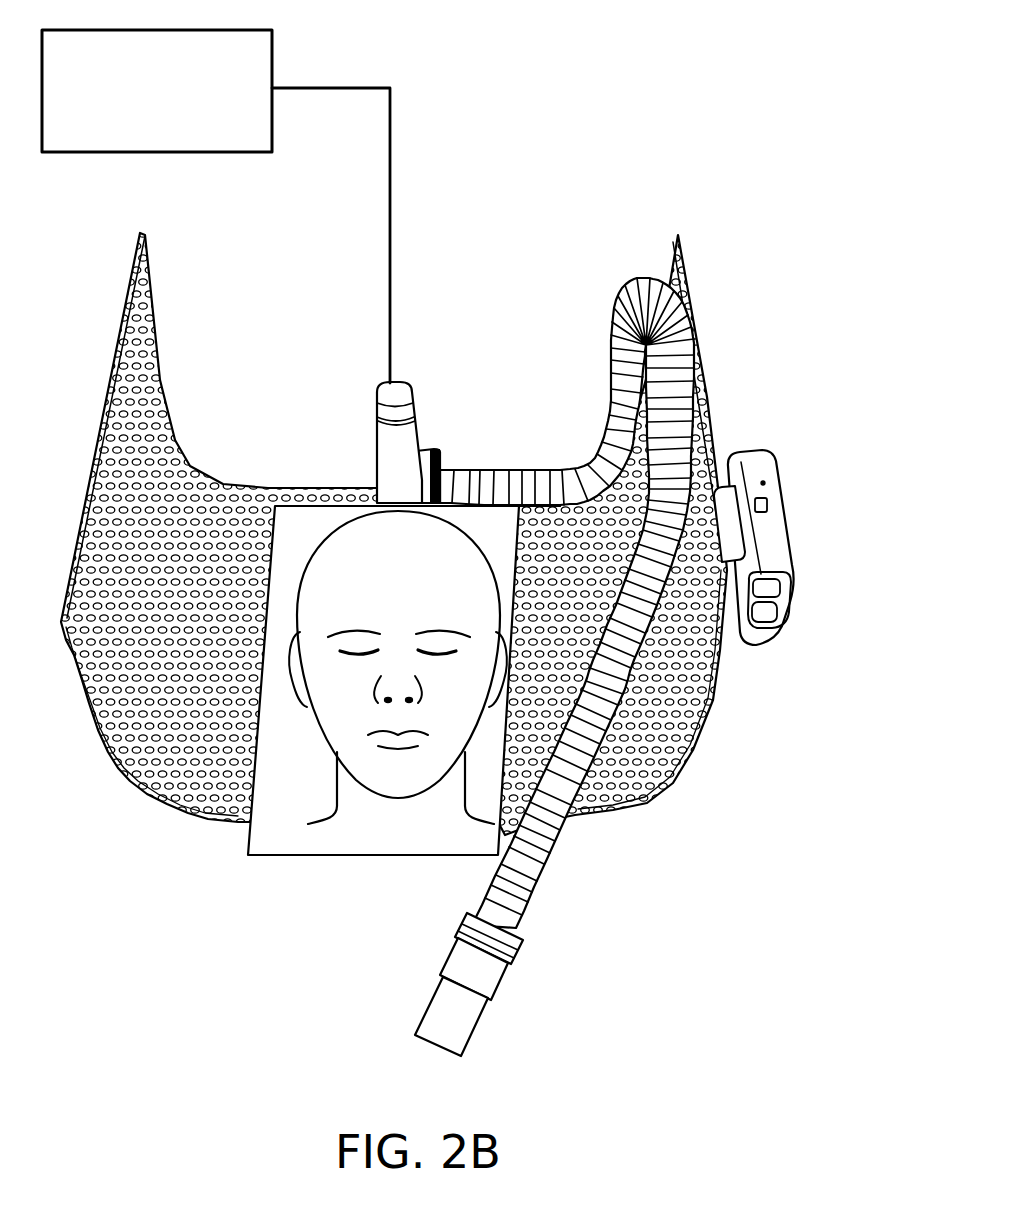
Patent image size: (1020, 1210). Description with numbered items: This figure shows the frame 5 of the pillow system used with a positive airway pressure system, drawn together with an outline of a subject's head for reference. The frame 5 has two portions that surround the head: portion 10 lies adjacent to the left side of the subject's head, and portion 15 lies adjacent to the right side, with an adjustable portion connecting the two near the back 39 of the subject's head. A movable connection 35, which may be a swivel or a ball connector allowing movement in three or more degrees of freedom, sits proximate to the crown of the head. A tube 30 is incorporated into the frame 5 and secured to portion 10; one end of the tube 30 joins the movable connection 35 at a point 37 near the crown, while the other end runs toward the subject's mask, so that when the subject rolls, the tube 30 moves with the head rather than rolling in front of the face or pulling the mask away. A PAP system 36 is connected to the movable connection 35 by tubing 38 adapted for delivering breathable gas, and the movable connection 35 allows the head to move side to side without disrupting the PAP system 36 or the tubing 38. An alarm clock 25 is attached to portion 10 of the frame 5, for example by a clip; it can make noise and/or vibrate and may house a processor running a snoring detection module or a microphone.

The frame 5 is at (684, 84).
The portion 10 is at (407, 534).
The portion 15 is at (115, 357).
The alarm clock 25 is at (754, 640).
The tube 30 is at (527, 888).
The movable connection 35 is at (377, 446).
The PAP system 36 is at (272, 63).
The point 37 is at (448, 523).
The tubing 38 is at (390, 158).
The back 39 is at (410, 665).